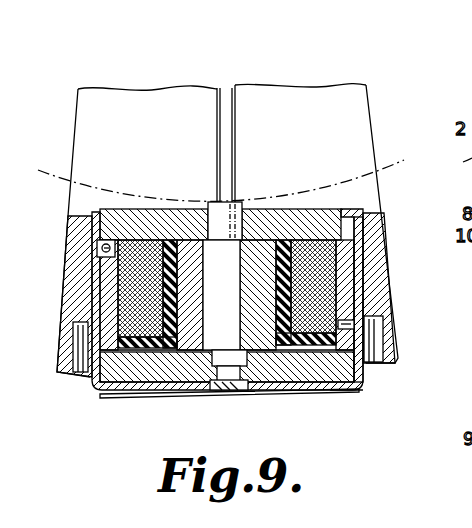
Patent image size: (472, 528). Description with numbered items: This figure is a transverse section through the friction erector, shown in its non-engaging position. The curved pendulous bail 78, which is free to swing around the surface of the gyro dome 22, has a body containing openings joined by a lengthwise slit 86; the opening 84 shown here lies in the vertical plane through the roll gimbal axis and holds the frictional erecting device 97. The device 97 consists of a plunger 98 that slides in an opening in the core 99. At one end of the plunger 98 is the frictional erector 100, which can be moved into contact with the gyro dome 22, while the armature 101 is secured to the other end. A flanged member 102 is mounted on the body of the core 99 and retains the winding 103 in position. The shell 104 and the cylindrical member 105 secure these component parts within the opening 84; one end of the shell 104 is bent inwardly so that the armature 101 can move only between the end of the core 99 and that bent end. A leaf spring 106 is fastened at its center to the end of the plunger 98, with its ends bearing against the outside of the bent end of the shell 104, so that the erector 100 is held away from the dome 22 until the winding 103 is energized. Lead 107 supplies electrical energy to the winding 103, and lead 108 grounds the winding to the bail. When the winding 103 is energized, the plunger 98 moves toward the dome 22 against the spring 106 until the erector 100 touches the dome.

The curved pendulous bail 78 is at (345, 86).
The gyro dome 22 is at (58, 178).
The lengthwise slit 86 is at (232, 90).
The opening 84 is at (360, 220).
The core 99 is at (274, 216).
The cylindrical member 105 is at (343, 243).
The shell 104 is at (357, 262).
The winding 103 is at (326, 292).
The flanged member 102 is at (299, 343).
The frictional erector 100 is at (240, 205).
The armature 101 is at (182, 376).
The plunger 98 is at (208, 249).
The lead 108 is at (97, 243).
The lead 107 is at (346, 325).
The leaf spring 106 is at (147, 397).
The frictional erecting device 97 is at (345, 397).